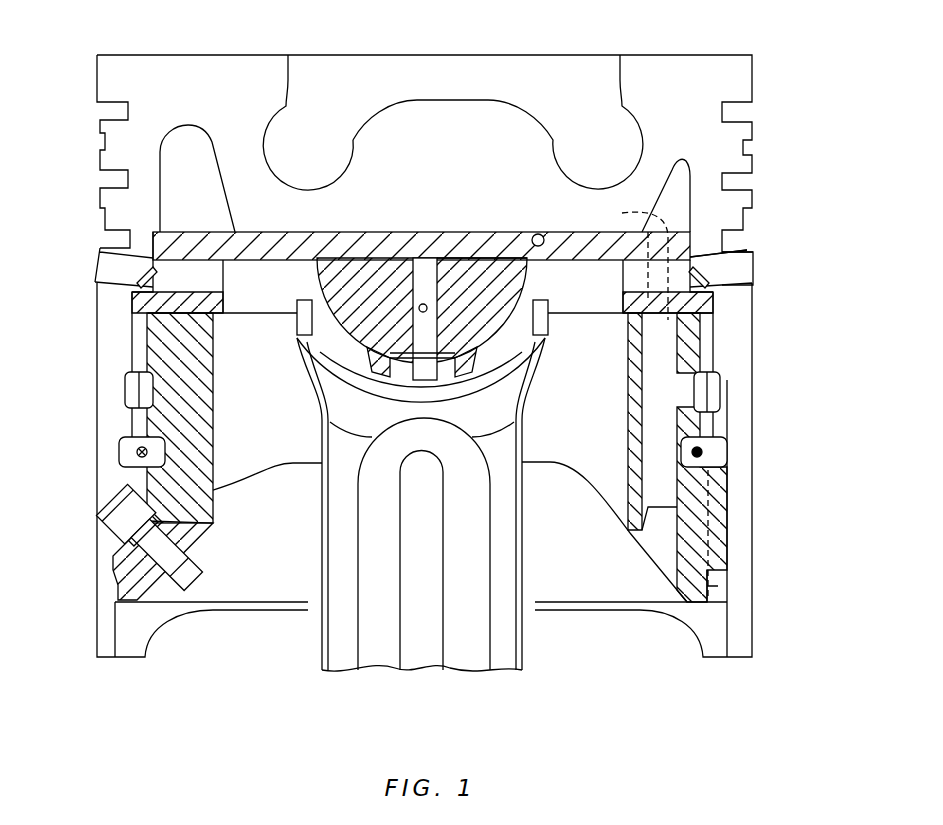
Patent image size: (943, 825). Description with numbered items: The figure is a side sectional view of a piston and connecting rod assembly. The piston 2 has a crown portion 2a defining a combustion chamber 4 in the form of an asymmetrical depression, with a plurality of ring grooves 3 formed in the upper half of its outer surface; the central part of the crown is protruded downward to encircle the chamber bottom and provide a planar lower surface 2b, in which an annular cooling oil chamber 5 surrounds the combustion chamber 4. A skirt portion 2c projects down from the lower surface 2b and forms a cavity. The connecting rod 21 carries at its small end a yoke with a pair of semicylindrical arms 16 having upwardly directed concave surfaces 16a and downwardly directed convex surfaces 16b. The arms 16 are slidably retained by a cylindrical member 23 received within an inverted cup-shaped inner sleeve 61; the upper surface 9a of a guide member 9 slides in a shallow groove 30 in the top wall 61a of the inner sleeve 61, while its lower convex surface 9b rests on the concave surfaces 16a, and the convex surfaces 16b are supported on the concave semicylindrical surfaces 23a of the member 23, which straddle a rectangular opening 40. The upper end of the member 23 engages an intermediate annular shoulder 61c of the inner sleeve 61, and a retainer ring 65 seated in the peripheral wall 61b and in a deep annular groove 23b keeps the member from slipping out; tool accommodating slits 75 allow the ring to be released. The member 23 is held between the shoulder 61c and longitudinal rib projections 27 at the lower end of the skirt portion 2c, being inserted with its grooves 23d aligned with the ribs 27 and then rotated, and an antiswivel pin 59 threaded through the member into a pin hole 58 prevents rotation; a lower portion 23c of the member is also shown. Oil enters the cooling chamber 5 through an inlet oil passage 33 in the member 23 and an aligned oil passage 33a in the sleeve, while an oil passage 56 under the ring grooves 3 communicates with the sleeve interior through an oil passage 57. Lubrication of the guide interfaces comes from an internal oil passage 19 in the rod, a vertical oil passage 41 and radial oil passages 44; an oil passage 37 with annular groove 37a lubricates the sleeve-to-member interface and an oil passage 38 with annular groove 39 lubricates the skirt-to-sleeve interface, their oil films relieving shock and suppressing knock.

The piston 2 is at (244, 44).
The crown portion 2a is at (432, 160).
The lower surface of crown portion 2b is at (538, 232).
The skirt portion 2c is at (735, 377).
The ring grooves 3 is at (100, 182).
The combustion chamber 4 is at (275, 166).
The annular cooling oil chamber 5 is at (178, 172).
The guide member 9 is at (470, 307).
The upper surface of guide member 9a is at (344, 248).
The lower convex surface of guide member 9b is at (508, 372).
The semicylindrical arms 16 is at (623, 282).
The upwardly directed concave surfaces 16a is at (327, 318).
The downwardly directed convex surfaces 16b is at (313, 390).
The internal oil passage 19 is at (512, 405).
The connecting rod 21 is at (425, 645).
The cylindrical member 23 is at (165, 337).
The concave semicylindrical surfaces 23a is at (290, 302).
The annular groove of cylindrical member 23b is at (715, 462).
The ring carrier lower portion 23c is at (720, 540).
The grooves of cylindrical member 23d is at (710, 507).
The longitudinal rib projections 27 is at (695, 593).
The shallow groove 30 is at (488, 250).
The inlet oil passage 33 is at (653, 537).
The oil passage of inner sleeve 33a is at (621, 260).
The oil passage 37 is at (677, 392).
The annular groove 37a is at (145, 393).
The oil passage 38 is at (710, 390).
The annular groove 39 is at (712, 427).
The rectangular opening 40 is at (213, 485).
The vertical oil passage 41 is at (427, 250).
The oil passages 44 is at (417, 310).
The oil passage 56 is at (730, 268).
The oil passage 57 is at (603, 297).
The pin hole 58 is at (103, 480).
The antiswivel pin 59 is at (105, 500).
The inner sleeve 61 is at (372, 228).
The top wall of inner sleeve 61a is at (257, 248).
The peripheral wall of inner sleeve 61b is at (140, 355).
The intermediate annular shoulder 61c is at (718, 333).
The retainer ring 65 is at (147, 452).
The tool accommodating slits 75 is at (127, 450).